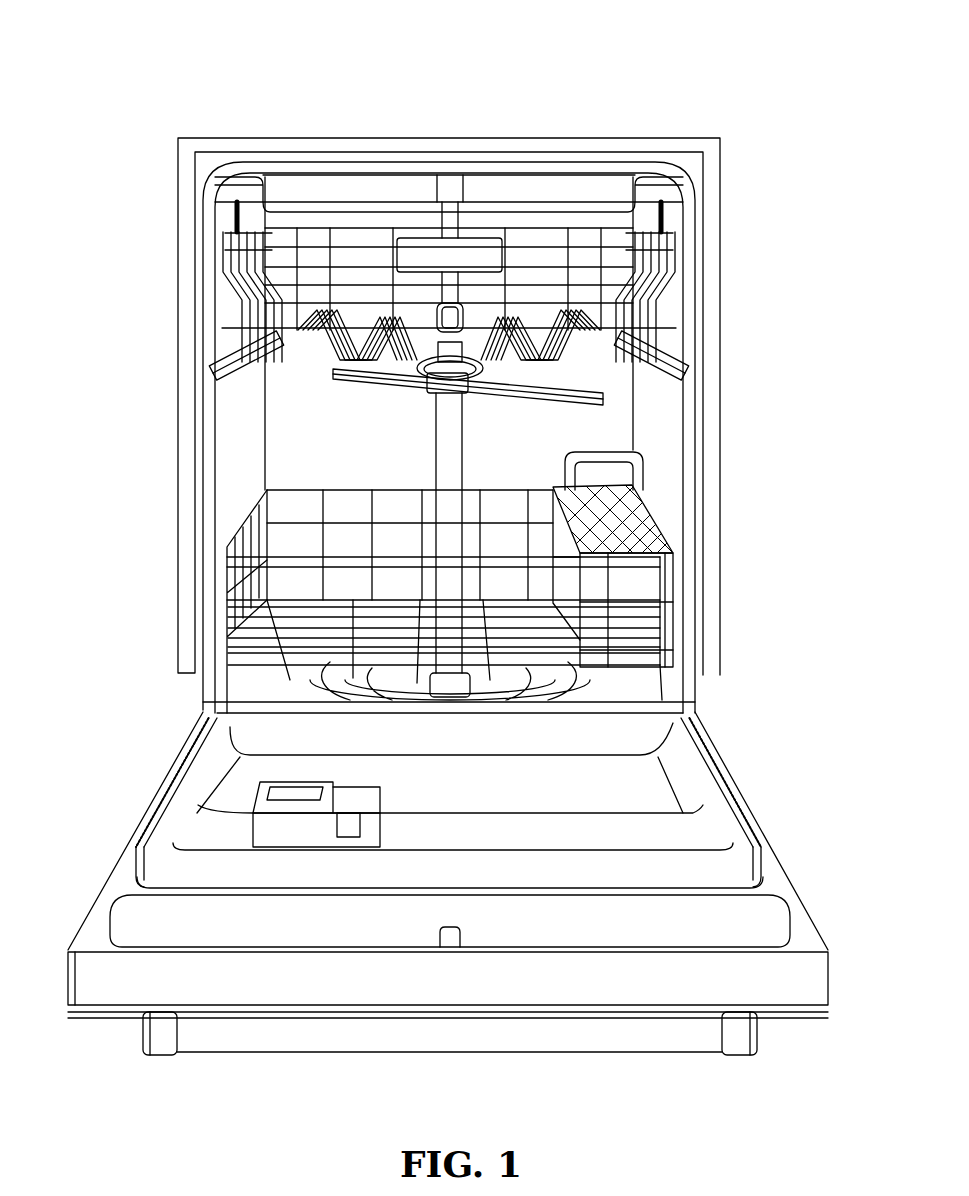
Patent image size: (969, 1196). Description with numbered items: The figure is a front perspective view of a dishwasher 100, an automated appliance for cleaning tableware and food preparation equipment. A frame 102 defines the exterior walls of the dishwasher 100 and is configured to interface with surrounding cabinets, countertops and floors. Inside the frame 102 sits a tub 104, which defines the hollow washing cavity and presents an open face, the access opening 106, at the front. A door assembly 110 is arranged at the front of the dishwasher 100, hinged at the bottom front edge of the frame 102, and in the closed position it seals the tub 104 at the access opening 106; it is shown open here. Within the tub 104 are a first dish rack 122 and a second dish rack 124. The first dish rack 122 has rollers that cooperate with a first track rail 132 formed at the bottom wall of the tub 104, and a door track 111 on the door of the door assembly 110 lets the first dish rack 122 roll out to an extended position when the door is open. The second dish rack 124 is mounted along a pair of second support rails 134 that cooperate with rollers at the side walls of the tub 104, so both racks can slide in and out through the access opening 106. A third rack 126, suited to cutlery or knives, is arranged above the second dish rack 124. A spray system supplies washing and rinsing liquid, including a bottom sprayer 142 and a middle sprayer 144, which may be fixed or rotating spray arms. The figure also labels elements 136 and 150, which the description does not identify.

The dishwasher 100 is at (203, 72).
The frame 102 is at (735, 160).
The tub 104 is at (695, 450).
The access opening 106 is at (358, 433).
The door assembly 110 is at (623, 812).
The door track 111 is at (702, 758).
The first dish rack 122 is at (590, 655).
The second dish rack 124 is at (662, 330).
The third rack 126 is at (530, 190).
The first track rail 132 is at (218, 672).
The second support rails 134 is at (218, 370).
The mounting bracket 136 is at (232, 222).
The bottom sprayer 142 is at (633, 697).
The middle sprayer 144 is at (375, 392).
The silverware basket 150 is at (648, 572).